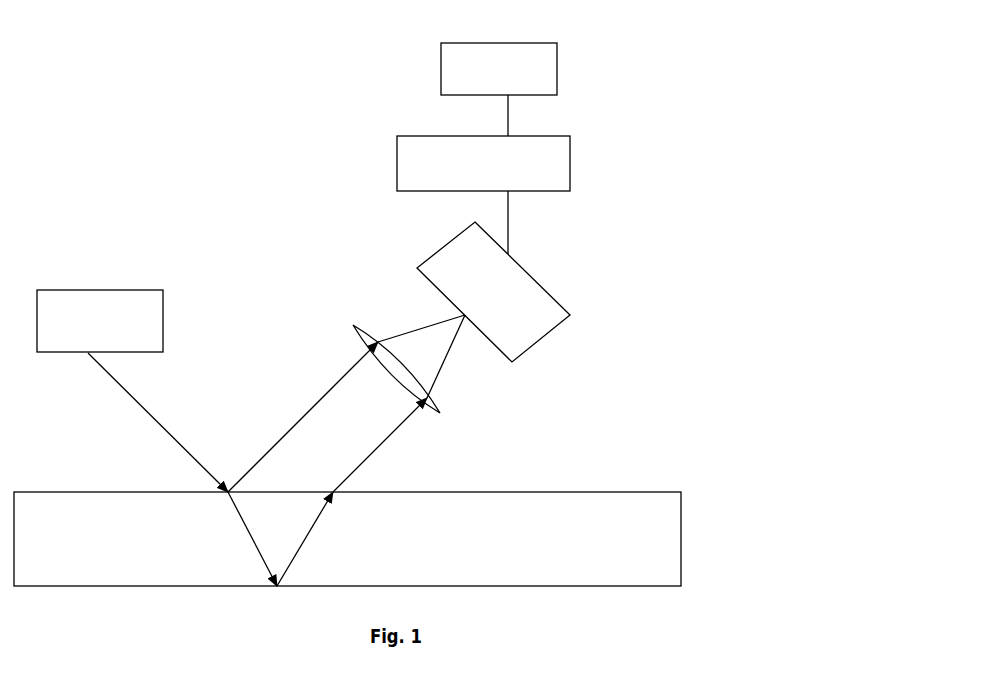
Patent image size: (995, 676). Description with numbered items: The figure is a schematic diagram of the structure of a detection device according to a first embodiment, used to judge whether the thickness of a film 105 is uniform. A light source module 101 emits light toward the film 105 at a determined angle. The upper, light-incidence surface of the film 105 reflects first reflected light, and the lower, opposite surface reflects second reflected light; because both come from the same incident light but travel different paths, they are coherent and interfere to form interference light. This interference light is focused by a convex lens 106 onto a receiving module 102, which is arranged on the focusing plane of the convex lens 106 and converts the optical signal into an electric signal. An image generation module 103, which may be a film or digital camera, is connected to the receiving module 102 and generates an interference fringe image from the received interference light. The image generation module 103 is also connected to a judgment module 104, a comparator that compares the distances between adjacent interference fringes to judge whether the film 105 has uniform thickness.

The light source module 101 is at (85, 290).
The receiving module 102 is at (520, 334).
The image generation module 103 is at (570, 154).
The judgment module 104 is at (557, 75).
The film 105 is at (650, 538).
The convex lens 106 is at (353, 325).